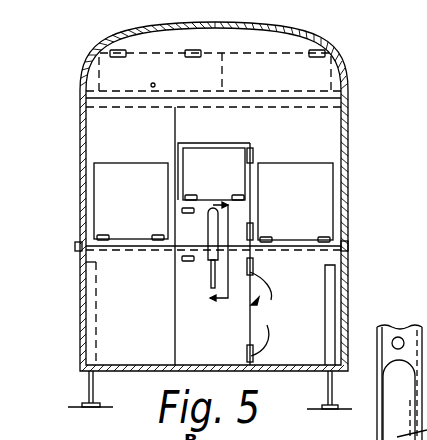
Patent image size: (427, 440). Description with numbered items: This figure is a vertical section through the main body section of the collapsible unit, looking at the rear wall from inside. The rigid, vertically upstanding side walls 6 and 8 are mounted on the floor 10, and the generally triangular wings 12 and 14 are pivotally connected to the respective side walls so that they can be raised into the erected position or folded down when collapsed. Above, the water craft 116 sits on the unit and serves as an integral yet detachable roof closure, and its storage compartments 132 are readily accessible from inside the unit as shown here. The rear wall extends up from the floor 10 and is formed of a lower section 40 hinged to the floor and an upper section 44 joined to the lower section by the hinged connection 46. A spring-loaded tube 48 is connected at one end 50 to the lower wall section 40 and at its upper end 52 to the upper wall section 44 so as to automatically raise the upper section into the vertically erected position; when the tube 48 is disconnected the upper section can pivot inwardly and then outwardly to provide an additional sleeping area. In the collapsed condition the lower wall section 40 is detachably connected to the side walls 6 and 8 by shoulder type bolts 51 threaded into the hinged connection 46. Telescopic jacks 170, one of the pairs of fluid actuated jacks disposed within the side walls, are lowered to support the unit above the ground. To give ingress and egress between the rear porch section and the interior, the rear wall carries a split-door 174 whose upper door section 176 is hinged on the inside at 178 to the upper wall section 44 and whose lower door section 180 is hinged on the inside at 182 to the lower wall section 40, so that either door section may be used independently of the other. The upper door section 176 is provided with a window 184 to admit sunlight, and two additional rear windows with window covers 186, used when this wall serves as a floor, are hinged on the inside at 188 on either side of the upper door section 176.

The side wall 6 is at (348, 282).
The side wall 8 is at (78, 311).
The floor 10 is at (211, 248).
The wing 12 is at (349, 192).
The wing 14 is at (80, 190).
The lower section of rear wall 40 is at (278, 356).
The upper section of rear wall 44 is at (334, 135).
The hinged connection 46 is at (343, 230).
The spring-loaded tube 48 is at (210, 285).
The end of spring-loaded tube 50 is at (190, 297).
The shoulder type bolt 51 is at (350, 247).
The upper end of spring-loaded tube 52 is at (212, 211).
The water craft 116 is at (332, 43).
The storage compartment 132 is at (319, 80).
The telescopic jack 170 is at (88, 385).
The split-door 174 is at (256, 301).
The upper door section 176 is at (178, 157).
The hinge of upper door section 178 is at (253, 230).
The lower door section 180 is at (176, 353).
The hinge of lower door section 182 is at (278, 314).
The window 184 is at (203, 149).
The window cover 186 is at (115, 177).
The hinge of window cover 188 is at (157, 237).